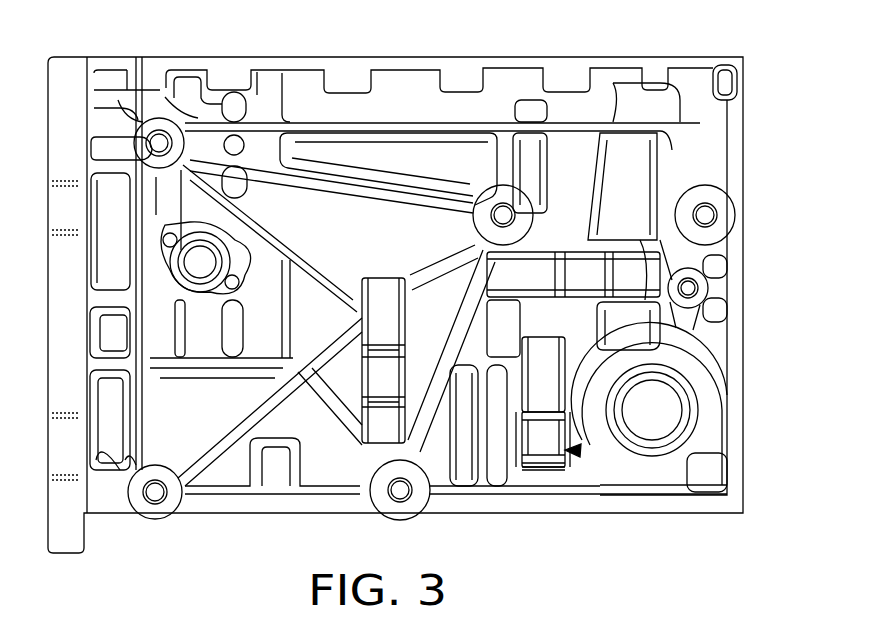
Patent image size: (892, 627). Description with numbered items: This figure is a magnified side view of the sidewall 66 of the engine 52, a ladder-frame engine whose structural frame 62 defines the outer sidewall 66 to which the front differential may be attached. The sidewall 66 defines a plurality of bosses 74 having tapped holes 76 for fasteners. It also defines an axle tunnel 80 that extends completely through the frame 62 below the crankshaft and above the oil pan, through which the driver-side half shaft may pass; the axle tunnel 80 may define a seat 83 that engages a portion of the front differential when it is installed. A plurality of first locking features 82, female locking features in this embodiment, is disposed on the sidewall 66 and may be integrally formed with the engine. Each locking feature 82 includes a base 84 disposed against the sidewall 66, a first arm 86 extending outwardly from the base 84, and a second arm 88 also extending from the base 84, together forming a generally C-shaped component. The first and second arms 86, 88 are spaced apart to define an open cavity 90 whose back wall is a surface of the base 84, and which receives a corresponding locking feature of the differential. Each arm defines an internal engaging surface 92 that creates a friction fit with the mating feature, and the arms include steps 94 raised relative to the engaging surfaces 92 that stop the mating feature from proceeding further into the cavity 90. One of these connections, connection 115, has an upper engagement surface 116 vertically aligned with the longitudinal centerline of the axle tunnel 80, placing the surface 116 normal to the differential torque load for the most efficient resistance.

The engine 52 is at (400, 62).
The structural frame 62 is at (735, 125).
The sidewall 66 is at (460, 175).
The bosses 74 is at (703, 196).
The tapped holes 76 is at (718, 217).
The axle tunnel 80 is at (683, 413).
The first locking features 82 is at (385, 295).
The seat 83 is at (683, 443).
The base 84 is at (555, 450).
The first arm 86 is at (543, 358).
The second arm 88 is at (527, 483).
The open cavity 90 is at (582, 452).
The internal engaging surface 92 is at (520, 435).
The steps 94 is at (590, 455).
The connection 115 is at (545, 382).
The upper engagement surface 116 is at (553, 487).